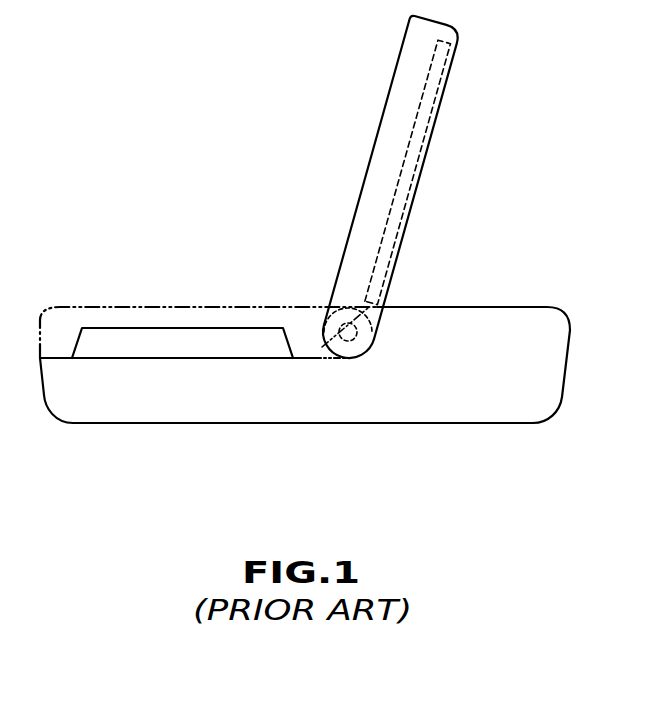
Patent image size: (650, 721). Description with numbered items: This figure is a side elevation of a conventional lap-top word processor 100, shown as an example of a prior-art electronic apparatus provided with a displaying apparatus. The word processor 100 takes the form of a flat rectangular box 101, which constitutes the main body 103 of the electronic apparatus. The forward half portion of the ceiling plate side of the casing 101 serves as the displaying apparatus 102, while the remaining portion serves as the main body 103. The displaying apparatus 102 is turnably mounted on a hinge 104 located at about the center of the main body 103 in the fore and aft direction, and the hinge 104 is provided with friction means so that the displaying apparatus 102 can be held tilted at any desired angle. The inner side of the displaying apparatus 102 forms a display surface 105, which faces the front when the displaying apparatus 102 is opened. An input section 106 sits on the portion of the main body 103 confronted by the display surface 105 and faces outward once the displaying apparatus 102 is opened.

The lap-top word processor 100 is at (220, 127).
The flat rectangular box 101 is at (507, 303).
The displaying apparatus 102 is at (379, 132).
The main body 103 is at (447, 312).
The hinge 104 is at (349, 362).
The display surface 105 is at (425, 92).
The input section 106 is at (181, 327).